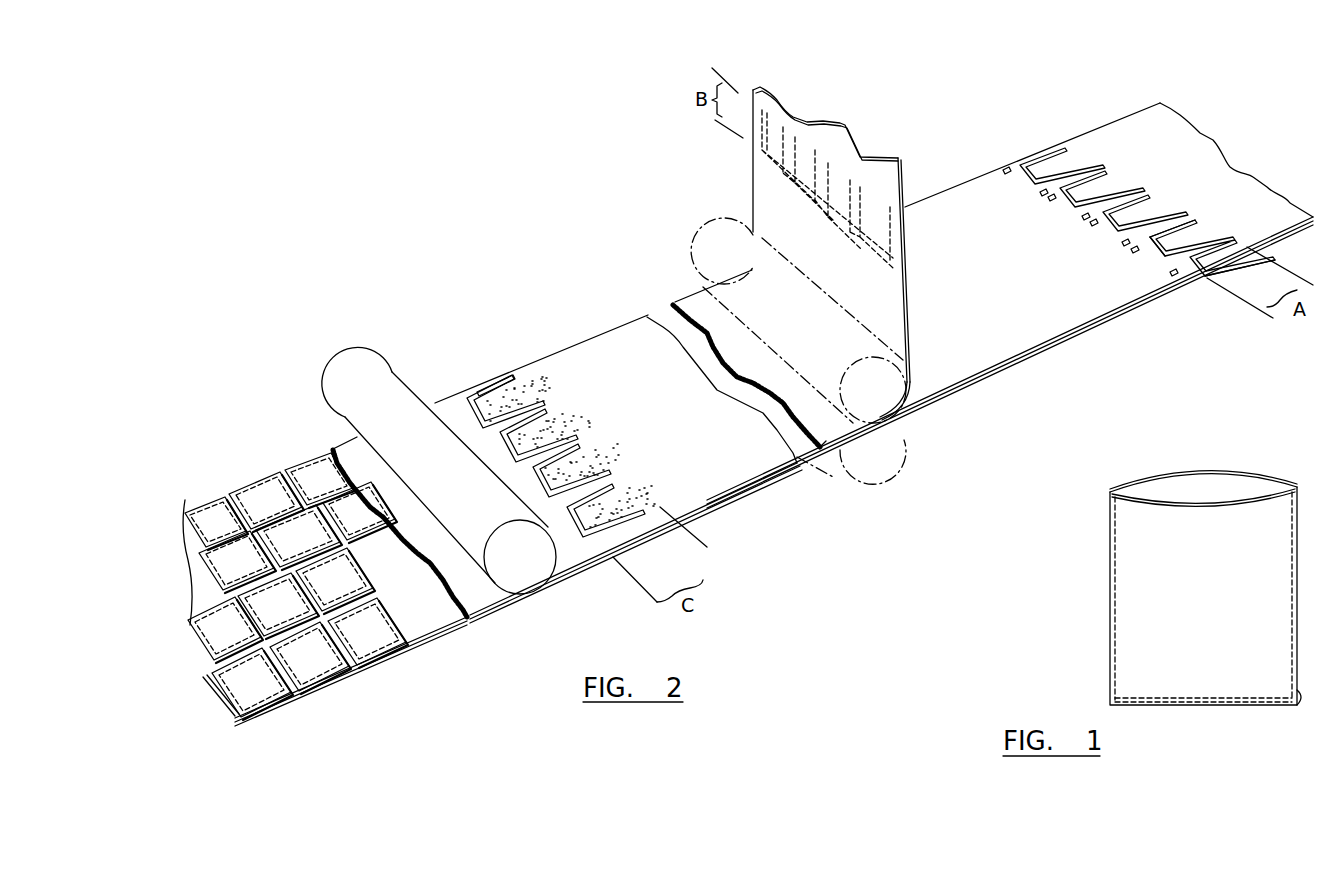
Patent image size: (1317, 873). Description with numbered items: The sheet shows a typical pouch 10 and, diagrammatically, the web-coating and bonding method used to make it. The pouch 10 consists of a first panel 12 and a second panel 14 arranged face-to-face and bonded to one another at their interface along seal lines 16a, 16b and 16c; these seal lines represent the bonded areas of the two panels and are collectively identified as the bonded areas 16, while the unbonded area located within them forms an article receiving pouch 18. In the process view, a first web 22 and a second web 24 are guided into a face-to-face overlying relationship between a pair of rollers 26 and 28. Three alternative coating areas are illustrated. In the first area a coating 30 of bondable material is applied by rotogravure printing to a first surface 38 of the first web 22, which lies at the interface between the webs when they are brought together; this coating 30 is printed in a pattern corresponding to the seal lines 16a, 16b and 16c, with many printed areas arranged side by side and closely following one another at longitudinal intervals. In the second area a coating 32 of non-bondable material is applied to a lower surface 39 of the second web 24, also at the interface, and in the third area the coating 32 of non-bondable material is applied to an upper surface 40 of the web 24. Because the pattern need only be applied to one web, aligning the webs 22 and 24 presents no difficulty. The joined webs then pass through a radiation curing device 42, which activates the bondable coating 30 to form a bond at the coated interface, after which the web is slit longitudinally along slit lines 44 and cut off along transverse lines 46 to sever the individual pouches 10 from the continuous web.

In FIG. 2, the pouch 10 is at (308, 683).
In FIG. 1, the pouch 10 is at (1162, 597).
In FIG. 1, the first panel 12 is at (1205, 492).
In FIG. 1, the second panel 14 is at (1163, 518).
In FIG. 1, the bonded areas 16 is at (1173, 620).
In FIG. 2, the seal line 16a is at (1190, 228).
In FIG. 1, the seal line 16a is at (1108, 638).
In FIG. 2, the seal line 16b is at (1168, 252).
In FIG. 1, the seal line 16b is at (1205, 700).
In FIG. 2, the seal line 16c is at (1258, 252).
In FIG. 1, the seal line 16c is at (1300, 700).
In FIG. 1, the article receiving pouch 18 is at (1240, 492).
In FIG. 2, the first web 22 is at (1020, 343).
In FIG. 2, the second web 24 is at (762, 183).
In FIG. 2, the roller 26 is at (905, 386).
In FIG. 2, the roller 28 is at (897, 450).
In FIG. 2, the coating of bondable material 30 is at (1223, 257).
In FIG. 2, the coating of non-bondable material 32 is at (630, 535).
In FIG. 2, the first surface 38 is at (1048, 320).
In FIG. 2, the lower surface 39 is at (862, 183).
In FIG. 2, the upper surface 40 is at (660, 505).
In FIG. 2, the radiation curing device 42 is at (390, 388).
In FIG. 2, the slit lines 44 is at (302, 555).
In FIG. 2, the transverse lines 46 is at (352, 668).